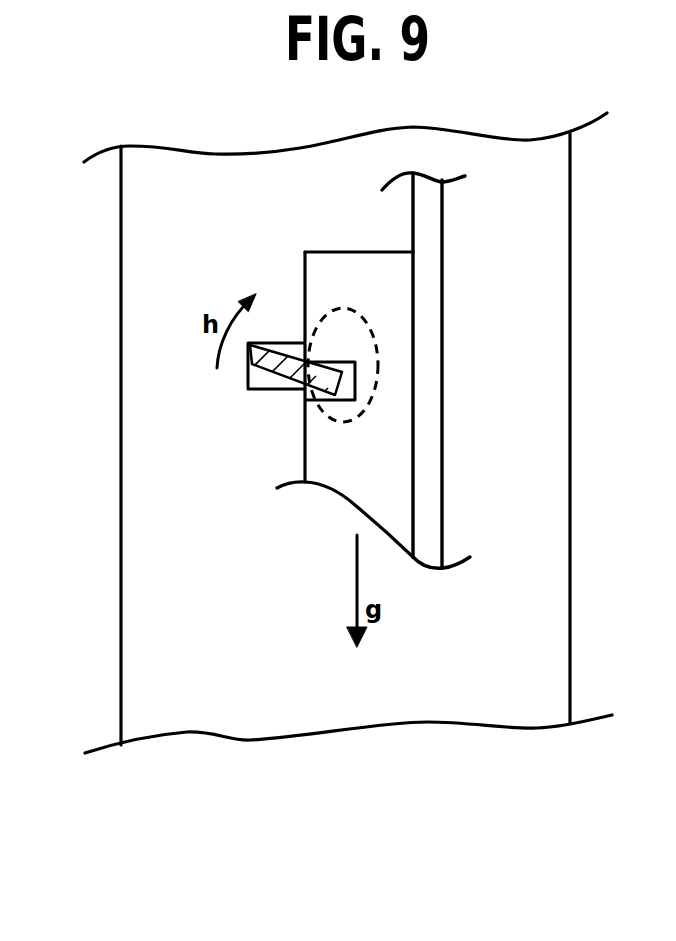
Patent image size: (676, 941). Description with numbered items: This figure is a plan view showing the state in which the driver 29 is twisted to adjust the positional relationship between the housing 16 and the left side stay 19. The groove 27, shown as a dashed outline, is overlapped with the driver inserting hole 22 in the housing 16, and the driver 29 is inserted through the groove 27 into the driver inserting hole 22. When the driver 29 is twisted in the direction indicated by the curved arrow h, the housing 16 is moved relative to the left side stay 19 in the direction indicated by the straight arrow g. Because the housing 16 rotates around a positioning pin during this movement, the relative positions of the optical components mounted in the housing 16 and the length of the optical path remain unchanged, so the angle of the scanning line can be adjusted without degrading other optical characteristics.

The housing 16 is at (430, 522).
The left side stay 19 is at (150, 595).
The driver inserting hole 22 is at (370, 332).
The groove 27 is at (357, 390).
The driver 29 is at (268, 377).